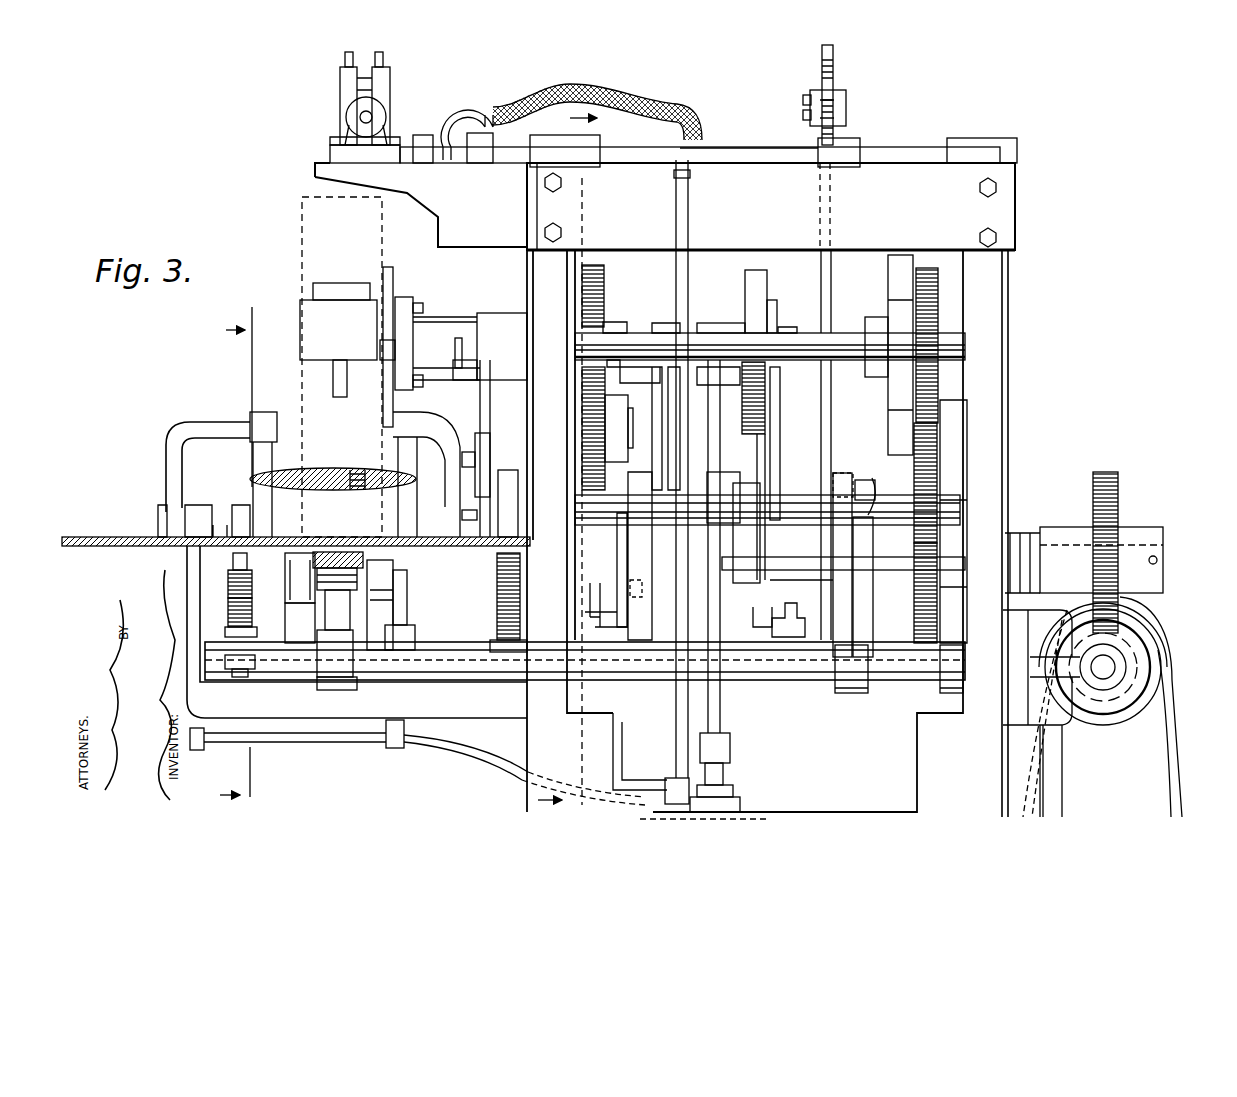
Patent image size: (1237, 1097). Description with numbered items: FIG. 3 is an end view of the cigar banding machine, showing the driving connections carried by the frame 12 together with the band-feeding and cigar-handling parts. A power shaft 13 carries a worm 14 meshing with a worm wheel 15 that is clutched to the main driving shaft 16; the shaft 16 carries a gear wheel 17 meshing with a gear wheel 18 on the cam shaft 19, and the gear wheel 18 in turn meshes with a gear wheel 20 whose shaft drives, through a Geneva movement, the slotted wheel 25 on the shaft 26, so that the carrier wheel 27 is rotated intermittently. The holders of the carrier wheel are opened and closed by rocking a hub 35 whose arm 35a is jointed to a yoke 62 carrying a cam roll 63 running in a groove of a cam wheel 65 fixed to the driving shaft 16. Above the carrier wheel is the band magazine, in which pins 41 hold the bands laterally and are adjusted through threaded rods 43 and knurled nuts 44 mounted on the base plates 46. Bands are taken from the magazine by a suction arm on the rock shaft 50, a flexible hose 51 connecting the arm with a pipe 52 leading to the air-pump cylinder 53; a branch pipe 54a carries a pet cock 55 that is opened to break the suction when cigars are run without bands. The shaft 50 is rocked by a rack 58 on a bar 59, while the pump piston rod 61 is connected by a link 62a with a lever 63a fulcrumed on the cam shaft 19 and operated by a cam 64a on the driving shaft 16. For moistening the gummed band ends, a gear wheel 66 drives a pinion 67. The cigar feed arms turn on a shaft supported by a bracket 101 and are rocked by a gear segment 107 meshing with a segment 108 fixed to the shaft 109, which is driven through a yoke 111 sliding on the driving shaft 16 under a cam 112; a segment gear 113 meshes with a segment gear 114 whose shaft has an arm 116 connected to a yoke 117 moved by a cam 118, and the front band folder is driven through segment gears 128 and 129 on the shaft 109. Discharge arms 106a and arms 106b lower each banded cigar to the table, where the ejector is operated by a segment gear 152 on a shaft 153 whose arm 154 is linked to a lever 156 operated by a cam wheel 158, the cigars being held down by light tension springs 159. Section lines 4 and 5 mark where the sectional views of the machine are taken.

The frame 12 is at (1030, 425).
The power shaft 13 is at (1108, 666).
The worm 14 is at (1150, 681).
The worm wheel 15 is at (1120, 490).
The main driving shaft 16 is at (890, 570).
The gear wheel 17 is at (914, 621).
The gear wheel 18 is at (940, 453).
The cam shaft 19 is at (786, 500).
The gear wheel 20 is at (940, 300).
The wheel 25 is at (888, 287).
The shaft 26 is at (633, 333).
The carrier wheel 27 is at (300, 243).
The hub 35 is at (405, 338).
The arm 35a is at (460, 380).
The pins 41 is at (405, 58).
The rods 43 is at (372, 117).
The knurled nuts 44 is at (385, 102).
The base plates 46 is at (330, 152).
The rock shaft 50 is at (752, 157).
The flexible hose 51 is at (620, 100).
The pipe 52 is at (690, 445).
The cylinder 53 is at (755, 812).
The pipe 54a is at (640, 790).
The pet cock 55 is at (197, 750).
The rack 58 is at (840, 89).
The bar 59 is at (834, 58).
The rod 61 is at (730, 775).
The yoke 62 is at (492, 408).
The link 62a is at (722, 702).
The cam pin or roll 63 is at (500, 640).
The lever 63a is at (738, 480).
The cam 64a is at (748, 590).
The cam wheel 65 is at (507, 470).
The gear wheel 66 is at (606, 272).
The pinion 67 is at (605, 477).
The bracket 101 is at (290, 705).
The rearward extensions 106a is at (262, 425).
The arms 106b is at (257, 464).
The gear segment 107 is at (395, 585).
The gear segment 108 is at (400, 610).
The shaft 109 is at (238, 677).
The yoke 111 is at (617, 590).
The cam 112 is at (652, 615).
The segment gear 113 is at (228, 572).
The segment gear 114 is at (228, 615).
The arm 116 is at (805, 625).
The yoke 117 is at (780, 450).
The cam 118 is at (768, 285).
The segment gear 128 is at (285, 583).
The segment gear 129 is at (285, 612).
The segment gear 152 is at (352, 690).
The shaft 153 is at (810, 680).
The arm 154 is at (855, 693).
The lever 156 is at (870, 470).
The cam wheel 158 is at (840, 480).
The light tension springs 159 is at (860, 490).
The section line 4 is at (238, 549).
The section line 5 is at (574, 436).